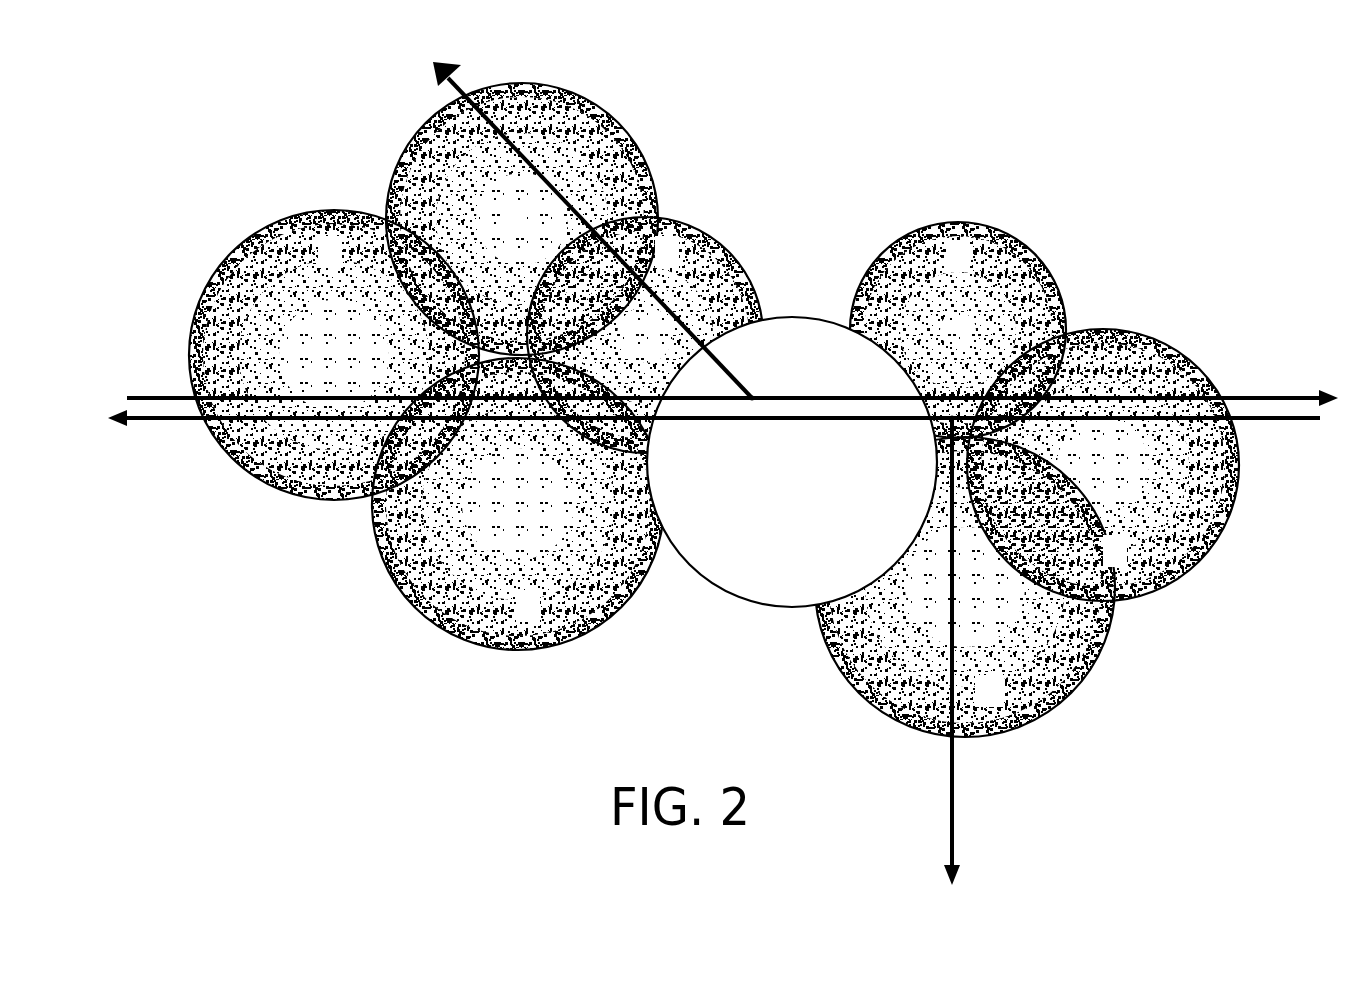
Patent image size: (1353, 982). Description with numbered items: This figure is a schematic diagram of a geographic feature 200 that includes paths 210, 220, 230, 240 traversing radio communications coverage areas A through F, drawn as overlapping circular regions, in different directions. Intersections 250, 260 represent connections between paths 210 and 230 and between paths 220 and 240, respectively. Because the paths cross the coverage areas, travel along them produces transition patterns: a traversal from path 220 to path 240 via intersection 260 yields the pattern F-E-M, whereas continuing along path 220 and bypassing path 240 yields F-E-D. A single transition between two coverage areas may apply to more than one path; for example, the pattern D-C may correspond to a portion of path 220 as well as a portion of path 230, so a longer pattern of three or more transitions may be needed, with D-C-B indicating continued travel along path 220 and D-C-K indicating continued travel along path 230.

The geographic feature 200 is at (155, 124).
The path 210 is at (1270, 395).
The path 220 is at (168, 423).
The path 230 is at (467, 97).
The path 240 is at (991, 651).
The intersection 250 is at (755, 396).
The intersection 260 is at (944, 421).